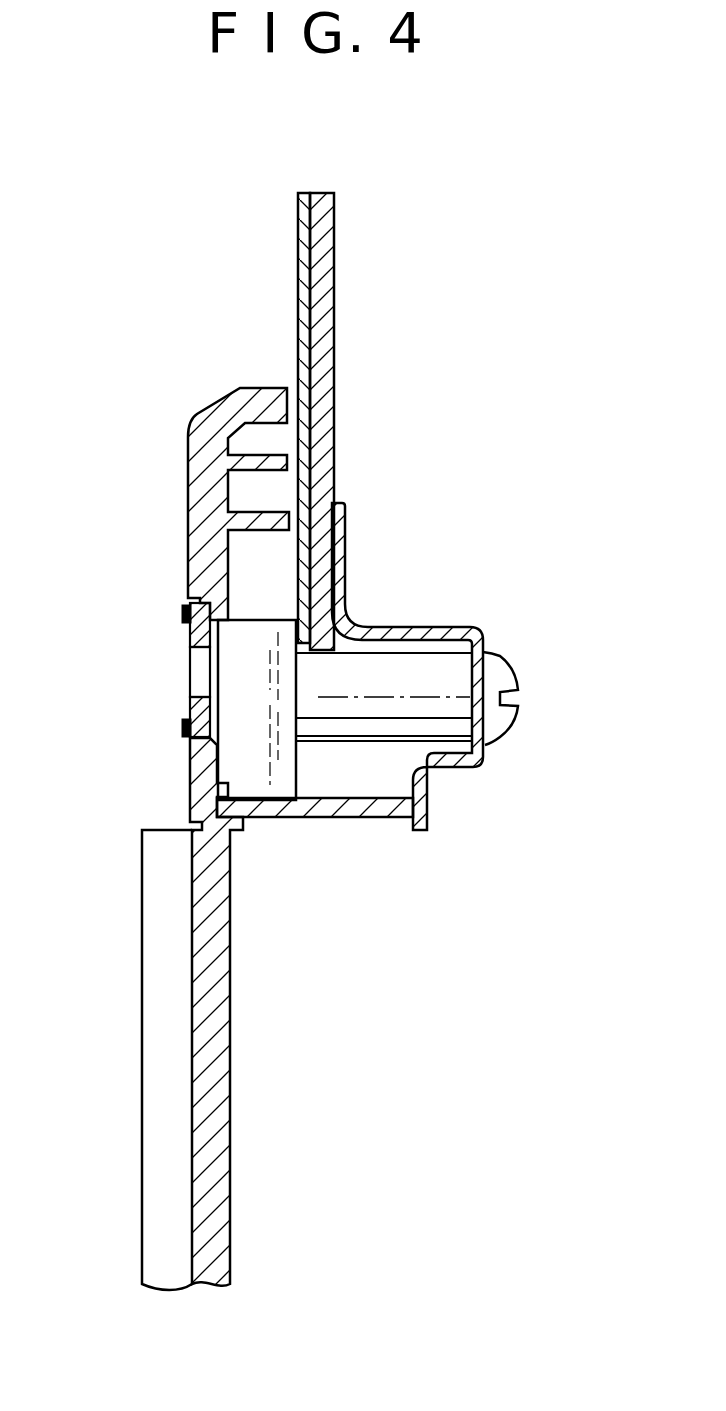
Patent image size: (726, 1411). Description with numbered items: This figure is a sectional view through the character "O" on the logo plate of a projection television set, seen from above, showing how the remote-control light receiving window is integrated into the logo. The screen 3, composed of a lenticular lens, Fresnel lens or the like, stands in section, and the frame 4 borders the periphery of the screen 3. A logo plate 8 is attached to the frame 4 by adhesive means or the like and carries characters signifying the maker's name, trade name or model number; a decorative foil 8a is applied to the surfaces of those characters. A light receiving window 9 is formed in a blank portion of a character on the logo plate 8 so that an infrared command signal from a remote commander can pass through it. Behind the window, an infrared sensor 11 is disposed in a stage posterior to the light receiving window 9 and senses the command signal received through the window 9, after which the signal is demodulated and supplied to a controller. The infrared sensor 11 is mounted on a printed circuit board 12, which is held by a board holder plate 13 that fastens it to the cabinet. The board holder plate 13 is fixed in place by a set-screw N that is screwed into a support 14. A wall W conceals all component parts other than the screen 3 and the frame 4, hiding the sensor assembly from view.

The screen 3 is at (300, 283).
The frame 4 is at (188, 480).
The logo plate 8 is at (190, 718).
The decorative foil 8a is at (182, 612).
The light receiving window 9 is at (198, 668).
The infrared sensor 11 is at (283, 790).
The printed circuit board 12 is at (385, 820).
The board holder plate 13 is at (400, 627).
The support 14 is at (442, 668).
The set-screw N is at (512, 680).
The wall W is at (142, 1011).